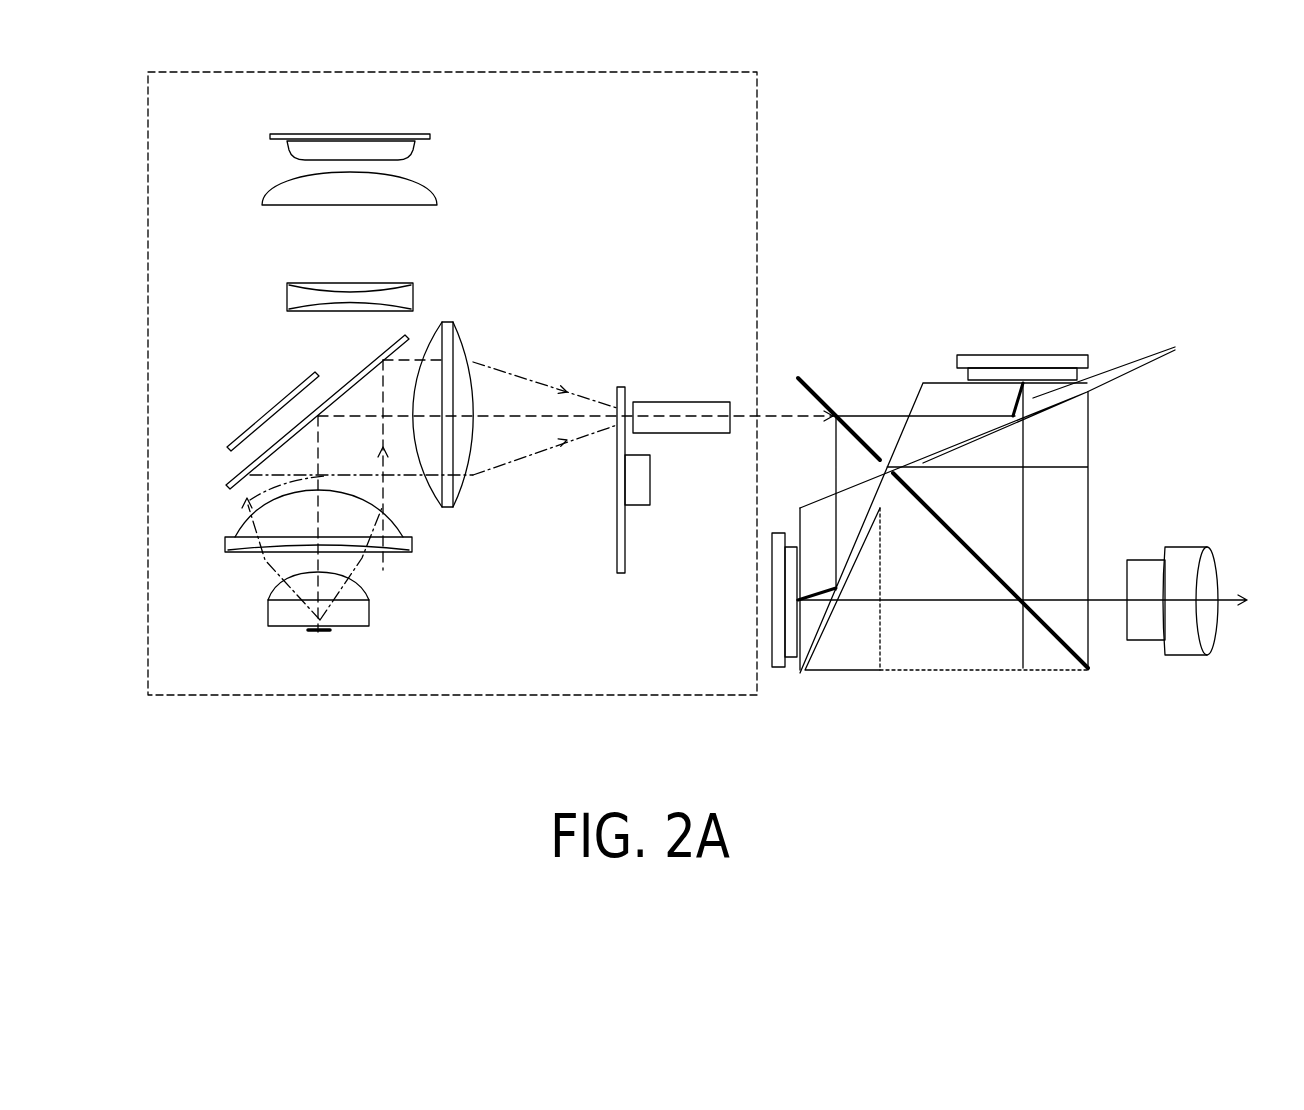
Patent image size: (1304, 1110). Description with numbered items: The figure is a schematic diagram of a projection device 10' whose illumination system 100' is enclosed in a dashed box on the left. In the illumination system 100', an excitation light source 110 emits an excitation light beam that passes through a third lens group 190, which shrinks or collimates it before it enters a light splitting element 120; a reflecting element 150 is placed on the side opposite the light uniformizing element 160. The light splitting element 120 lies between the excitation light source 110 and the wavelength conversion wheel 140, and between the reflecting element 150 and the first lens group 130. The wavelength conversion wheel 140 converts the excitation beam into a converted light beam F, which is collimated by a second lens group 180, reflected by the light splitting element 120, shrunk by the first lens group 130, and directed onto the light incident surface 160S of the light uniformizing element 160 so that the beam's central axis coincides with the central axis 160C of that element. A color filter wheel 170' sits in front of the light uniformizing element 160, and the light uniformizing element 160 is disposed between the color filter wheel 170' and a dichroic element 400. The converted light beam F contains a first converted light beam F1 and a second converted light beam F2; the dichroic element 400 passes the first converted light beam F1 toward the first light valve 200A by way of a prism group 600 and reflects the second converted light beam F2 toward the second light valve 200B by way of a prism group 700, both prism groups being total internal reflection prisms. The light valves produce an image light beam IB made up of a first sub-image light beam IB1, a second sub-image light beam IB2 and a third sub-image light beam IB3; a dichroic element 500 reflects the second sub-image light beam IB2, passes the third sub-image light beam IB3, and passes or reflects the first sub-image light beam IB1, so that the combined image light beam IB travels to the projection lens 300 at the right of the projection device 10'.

The illumination system 100' is at (491, 383).
The excitation light source 110 is at (431, 135).
The third lens group 190 is at (300, 298).
The reflecting element 150 is at (250, 432).
The light splitting element 120 is at (245, 472).
The first lens group 130 is at (447, 322).
The converted light beam F is at (240, 508).
The first converted light beam F1 is at (878, 415).
The second converted light beam F2 is at (832, 457).
The second lens group 180 is at (370, 613).
The wavelength conversion wheel 140 is at (320, 632).
The light incident surface 160S is at (627, 407).
The light uniformizing element 160 is at (702, 405).
The central axis of the light uniformizing element 160C is at (677, 416).
The color filter wheel 170' is at (630, 553).
The dichroic element 400 is at (832, 408).
The dichroic element 500 is at (1062, 650).
The prism group 600 is at (1005, 502).
The prism group 700 is at (840, 662).
The first light valve 200A is at (1035, 353).
The second light valve 200B is at (778, 670).
The projection lens 300 is at (1180, 547).
The image light beam IB is at (1206, 155).
The first sub-image light beam IB1 is at (1233, 596).
The second sub-image light beam IB2 is at (1025, 437).
The third sub-image light beam IB3 is at (955, 604).
The projection device 10' is at (1152, 742).